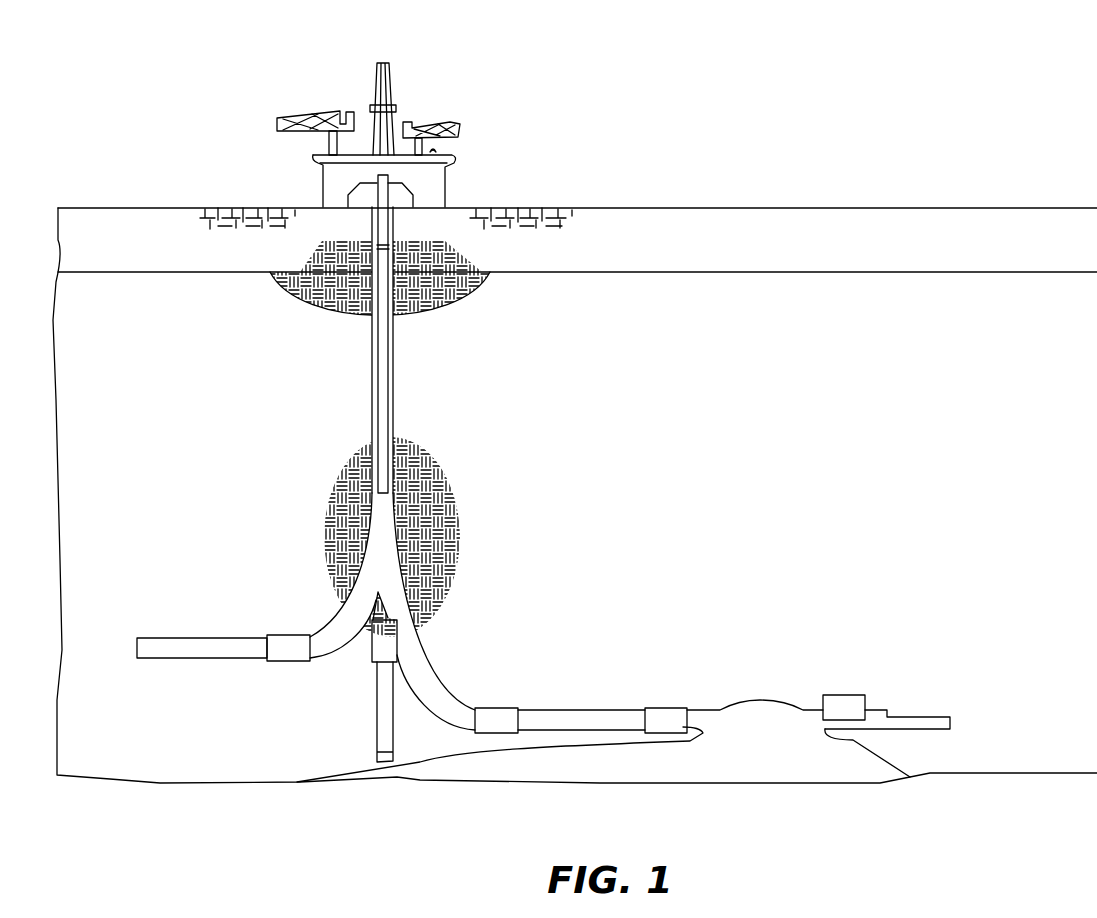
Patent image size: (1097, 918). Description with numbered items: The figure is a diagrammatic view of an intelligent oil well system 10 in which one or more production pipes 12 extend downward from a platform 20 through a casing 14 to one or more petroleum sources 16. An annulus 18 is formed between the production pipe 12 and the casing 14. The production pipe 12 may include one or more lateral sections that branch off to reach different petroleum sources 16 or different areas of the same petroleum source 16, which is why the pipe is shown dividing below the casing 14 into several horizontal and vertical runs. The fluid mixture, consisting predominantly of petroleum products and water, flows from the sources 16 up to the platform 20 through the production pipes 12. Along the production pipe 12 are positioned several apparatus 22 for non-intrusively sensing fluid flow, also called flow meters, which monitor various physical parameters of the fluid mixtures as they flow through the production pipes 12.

The intelligent oil well system 10 is at (427, 235).
The production pipe 12 is at (389, 397).
The casing 14 is at (371, 341).
The petroleum source 16 is at (768, 778).
The annulus 18 is at (389, 337).
The platform 20 is at (313, 157).
The apparatus for non-intrusively sensing fluid flow 22 is at (285, 635).